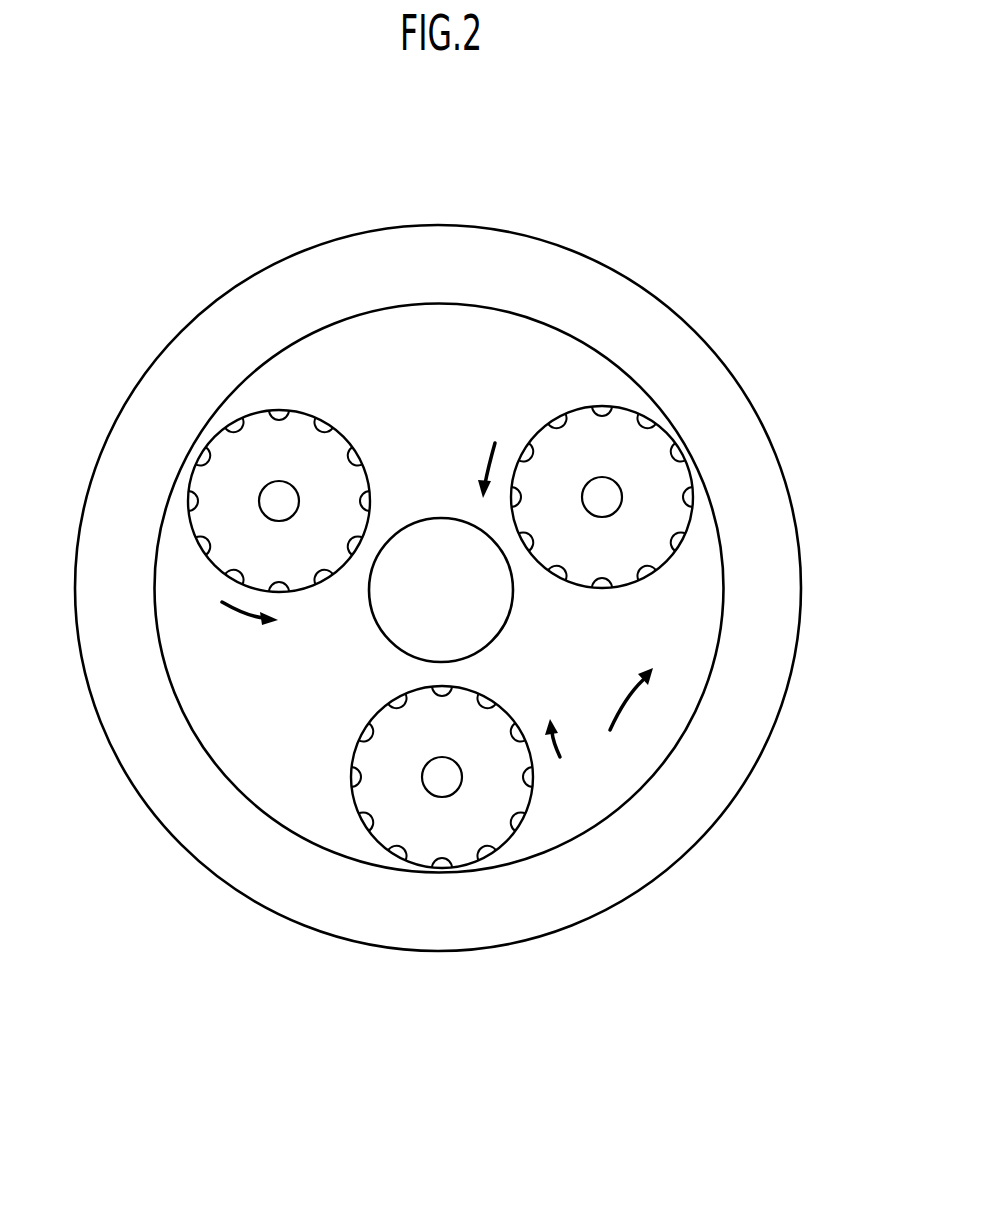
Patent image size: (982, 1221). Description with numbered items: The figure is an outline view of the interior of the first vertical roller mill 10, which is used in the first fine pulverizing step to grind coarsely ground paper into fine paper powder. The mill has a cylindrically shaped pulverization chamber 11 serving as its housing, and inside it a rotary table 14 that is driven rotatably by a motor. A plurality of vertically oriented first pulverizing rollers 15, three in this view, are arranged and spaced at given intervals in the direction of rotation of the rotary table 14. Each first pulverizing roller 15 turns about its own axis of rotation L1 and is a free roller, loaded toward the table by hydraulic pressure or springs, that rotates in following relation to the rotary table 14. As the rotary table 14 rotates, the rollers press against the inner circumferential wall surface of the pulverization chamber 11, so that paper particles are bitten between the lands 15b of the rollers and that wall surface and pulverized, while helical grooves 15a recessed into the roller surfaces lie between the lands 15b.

The first vertical roller mill 10 is at (480, 198).
The pulverization chamber 11 is at (782, 580).
The rotary table 14 is at (643, 743).
The first pulverizing roller 15 is at (456, 686).
The helical groove 15a is at (650, 581).
The land 15b is at (687, 520).
The axis of rotation L1 is at (602, 497).